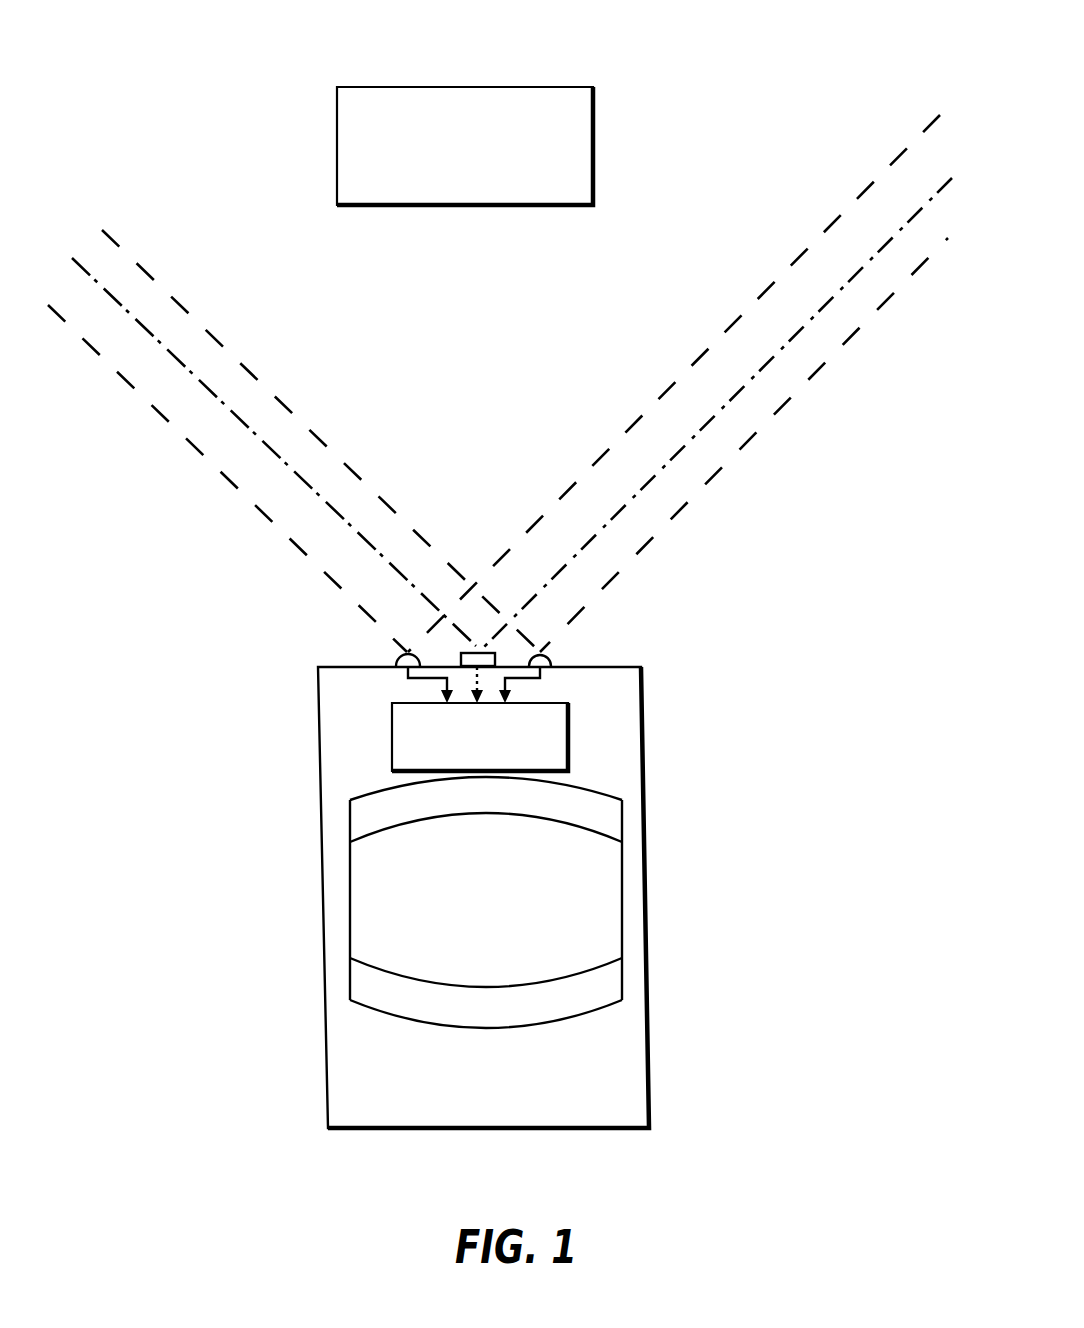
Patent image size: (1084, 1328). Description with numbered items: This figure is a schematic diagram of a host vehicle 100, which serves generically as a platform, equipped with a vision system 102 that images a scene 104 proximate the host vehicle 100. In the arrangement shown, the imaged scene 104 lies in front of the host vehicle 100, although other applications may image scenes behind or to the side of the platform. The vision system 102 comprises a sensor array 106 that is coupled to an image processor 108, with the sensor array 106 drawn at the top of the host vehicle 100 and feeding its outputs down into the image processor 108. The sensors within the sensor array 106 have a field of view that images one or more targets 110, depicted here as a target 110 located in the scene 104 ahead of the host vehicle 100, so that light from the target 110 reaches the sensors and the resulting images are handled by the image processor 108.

The host vehicle 100 is at (643, 767).
The vision system 102 is at (575, 651).
The scene 104 is at (836, 37).
The sensor array 106 is at (378, 650).
The image processor 108 is at (570, 725).
The target 110 is at (522, 86).